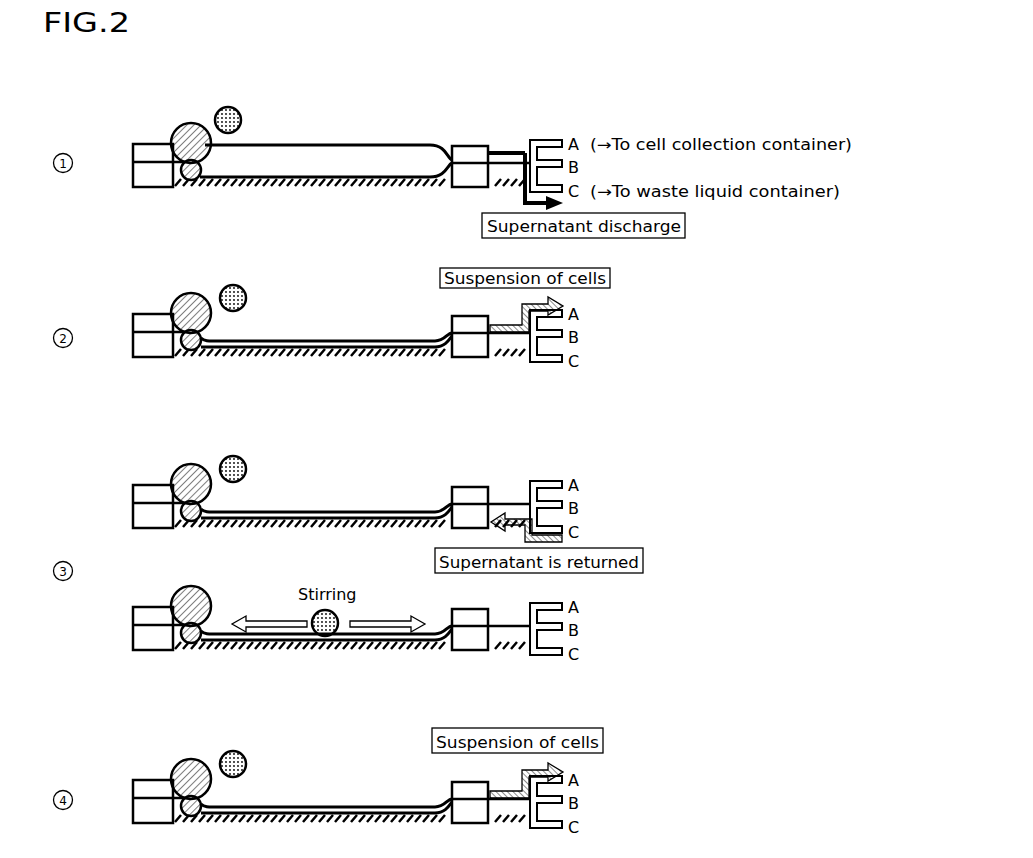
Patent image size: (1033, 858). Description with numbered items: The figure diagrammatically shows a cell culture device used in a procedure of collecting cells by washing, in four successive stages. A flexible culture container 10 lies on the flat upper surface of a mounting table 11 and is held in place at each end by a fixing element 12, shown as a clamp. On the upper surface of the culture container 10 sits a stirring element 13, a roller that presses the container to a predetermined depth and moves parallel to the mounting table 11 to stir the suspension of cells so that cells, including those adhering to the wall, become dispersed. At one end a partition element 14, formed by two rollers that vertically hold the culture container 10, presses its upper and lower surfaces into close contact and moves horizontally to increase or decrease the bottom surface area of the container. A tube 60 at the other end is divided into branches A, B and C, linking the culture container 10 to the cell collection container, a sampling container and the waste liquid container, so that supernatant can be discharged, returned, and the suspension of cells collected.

The culture container 10 is at (406, 152).
The mounting table 11 is at (315, 185).
The fixing element 12 is at (152, 178).
The stirring element 13 is at (230, 122).
The partition element 14 is at (190, 140).
The tube 60 is at (502, 150).